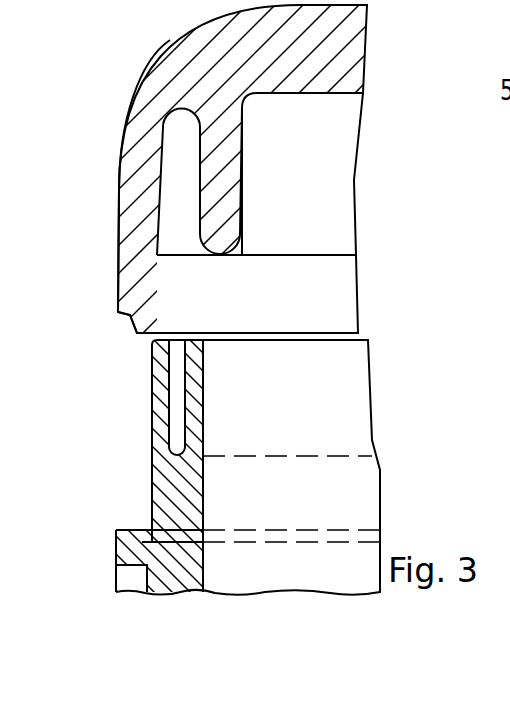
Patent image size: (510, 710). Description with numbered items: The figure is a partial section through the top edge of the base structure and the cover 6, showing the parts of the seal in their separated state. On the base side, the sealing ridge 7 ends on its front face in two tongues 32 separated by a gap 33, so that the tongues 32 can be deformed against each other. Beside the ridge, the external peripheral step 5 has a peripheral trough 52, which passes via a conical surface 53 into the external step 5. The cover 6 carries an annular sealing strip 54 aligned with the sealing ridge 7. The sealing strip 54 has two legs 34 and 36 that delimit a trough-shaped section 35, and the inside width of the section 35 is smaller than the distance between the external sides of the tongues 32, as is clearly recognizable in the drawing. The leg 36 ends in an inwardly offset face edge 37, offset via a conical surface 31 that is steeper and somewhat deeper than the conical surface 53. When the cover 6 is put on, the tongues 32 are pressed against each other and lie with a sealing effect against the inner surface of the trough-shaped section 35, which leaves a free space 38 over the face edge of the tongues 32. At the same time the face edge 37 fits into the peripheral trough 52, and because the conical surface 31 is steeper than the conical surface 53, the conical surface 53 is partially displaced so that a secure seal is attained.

The external peripheral step 5 is at (128, 532).
The cover 6 is at (340, 67).
The sealing ridge 7 is at (185, 498).
The conical surface 31 is at (132, 320).
The tongues 32 is at (175, 402).
The gap 33 is at (177, 379).
The leg 34 is at (227, 188).
The trough-shaped section 35 is at (182, 222).
The leg 36 is at (128, 203).
The face edge 37 is at (138, 335).
The space 38 is at (182, 117).
The peripheral trough 52 is at (145, 545).
The conical surface 53 is at (130, 542).
The sealing strip 54 is at (123, 138).